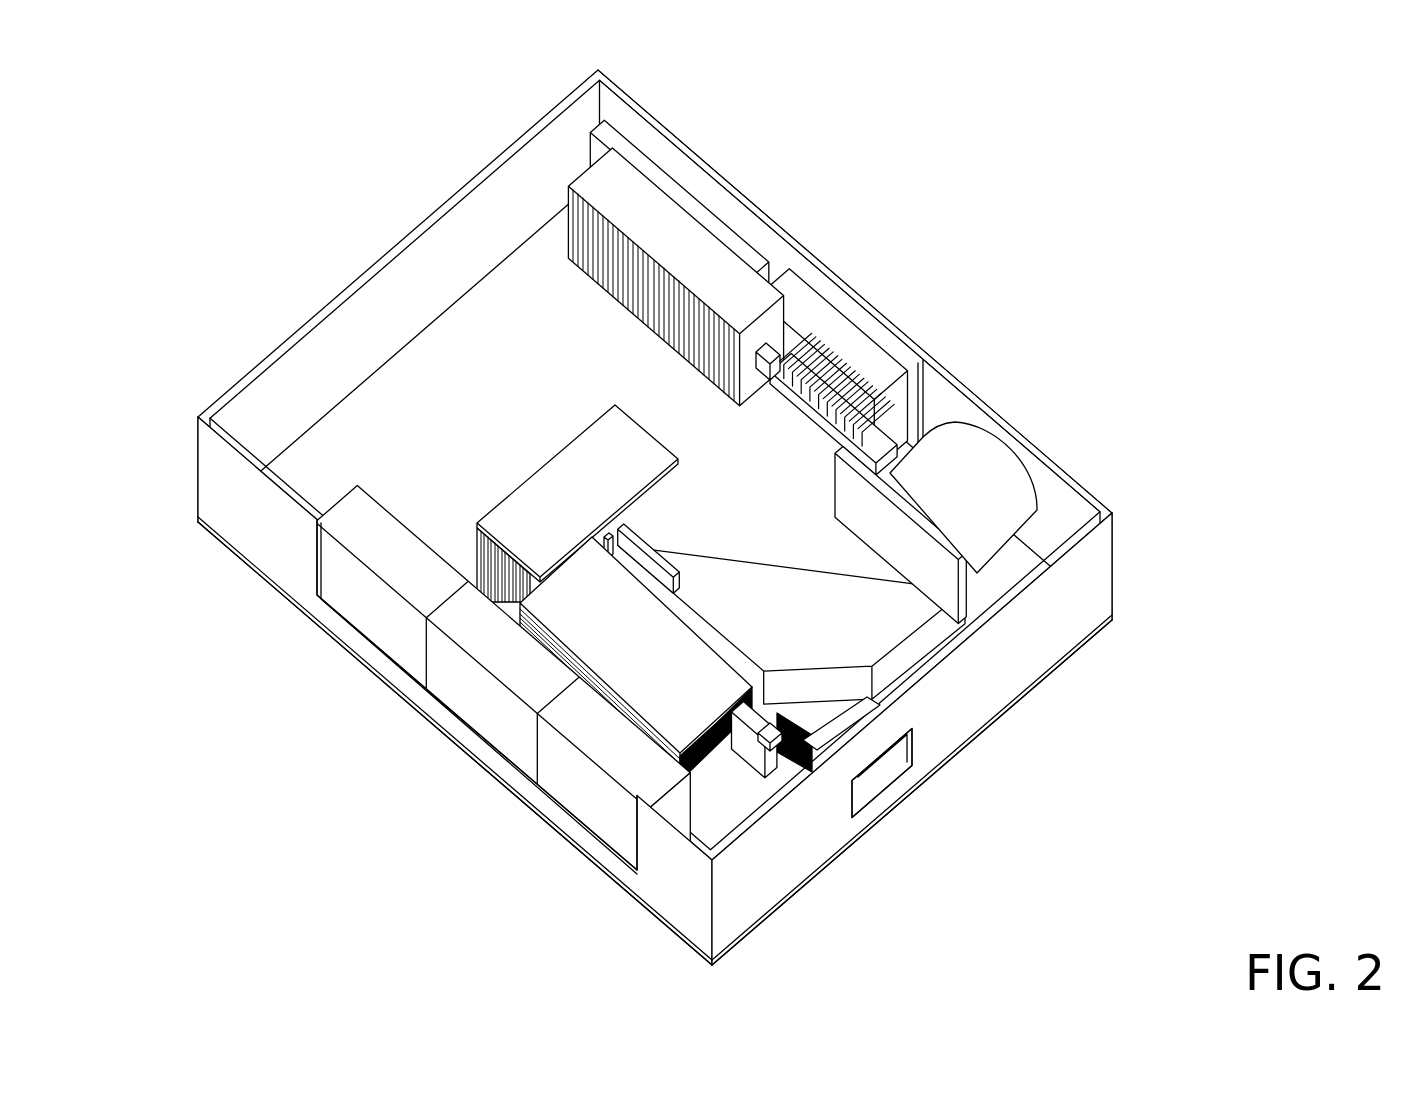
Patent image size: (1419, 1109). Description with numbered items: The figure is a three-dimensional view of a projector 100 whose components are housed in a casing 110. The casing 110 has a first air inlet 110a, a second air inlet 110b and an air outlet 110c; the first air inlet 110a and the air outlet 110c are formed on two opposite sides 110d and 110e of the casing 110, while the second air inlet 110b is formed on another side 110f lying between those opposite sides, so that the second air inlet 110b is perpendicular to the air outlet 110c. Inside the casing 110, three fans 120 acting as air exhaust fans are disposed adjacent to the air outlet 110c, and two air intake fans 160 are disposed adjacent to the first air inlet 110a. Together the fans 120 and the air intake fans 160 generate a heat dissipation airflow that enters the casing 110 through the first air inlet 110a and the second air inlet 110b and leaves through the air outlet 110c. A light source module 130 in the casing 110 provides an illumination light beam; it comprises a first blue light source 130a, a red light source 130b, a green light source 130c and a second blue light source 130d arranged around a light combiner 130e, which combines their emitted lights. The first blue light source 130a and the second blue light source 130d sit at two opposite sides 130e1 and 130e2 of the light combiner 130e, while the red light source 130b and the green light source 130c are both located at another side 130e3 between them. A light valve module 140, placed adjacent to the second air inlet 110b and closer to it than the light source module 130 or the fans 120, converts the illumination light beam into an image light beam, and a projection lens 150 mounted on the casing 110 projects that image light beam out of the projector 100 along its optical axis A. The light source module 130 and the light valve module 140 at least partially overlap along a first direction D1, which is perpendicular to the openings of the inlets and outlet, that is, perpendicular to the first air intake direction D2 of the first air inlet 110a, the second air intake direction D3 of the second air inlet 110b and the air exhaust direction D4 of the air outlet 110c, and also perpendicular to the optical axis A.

The projector 100 is at (636, 517).
The casing 110 is at (617, 517).
The first air inlet 110a is at (811, 279).
The second air inlet 110b is at (885, 795).
The air outlet 110c is at (270, 540).
The side of the casing 110d is at (893, 306).
The side of the casing 110e is at (413, 691).
The side of the casing 110f is at (912, 739).
The fan 120 is at (607, 800).
The light source module 130 is at (810, 452).
The first blue light source 130a is at (853, 395).
The red light source 130b is at (568, 213).
The green light source 130c is at (575, 473).
The second blue light source 130d is at (572, 598).
The light combiner 130e is at (922, 505).
The side of the light combiner 130e1 is at (795, 437).
The side of the light combiner 130e2 is at (648, 578).
The side of the light combiner 130e3 is at (633, 512).
The light valve module 140 is at (812, 720).
The projection lens 150 is at (1010, 492).
The air intake fan 160 is at (785, 273).
The optical axis A is at (1035, 430).
The first direction D1 is at (685, 873).
The first air intake direction D2 is at (850, 240).
The second air intake direction D3 is at (567, 847).
The air exhaust direction D4 is at (910, 862).